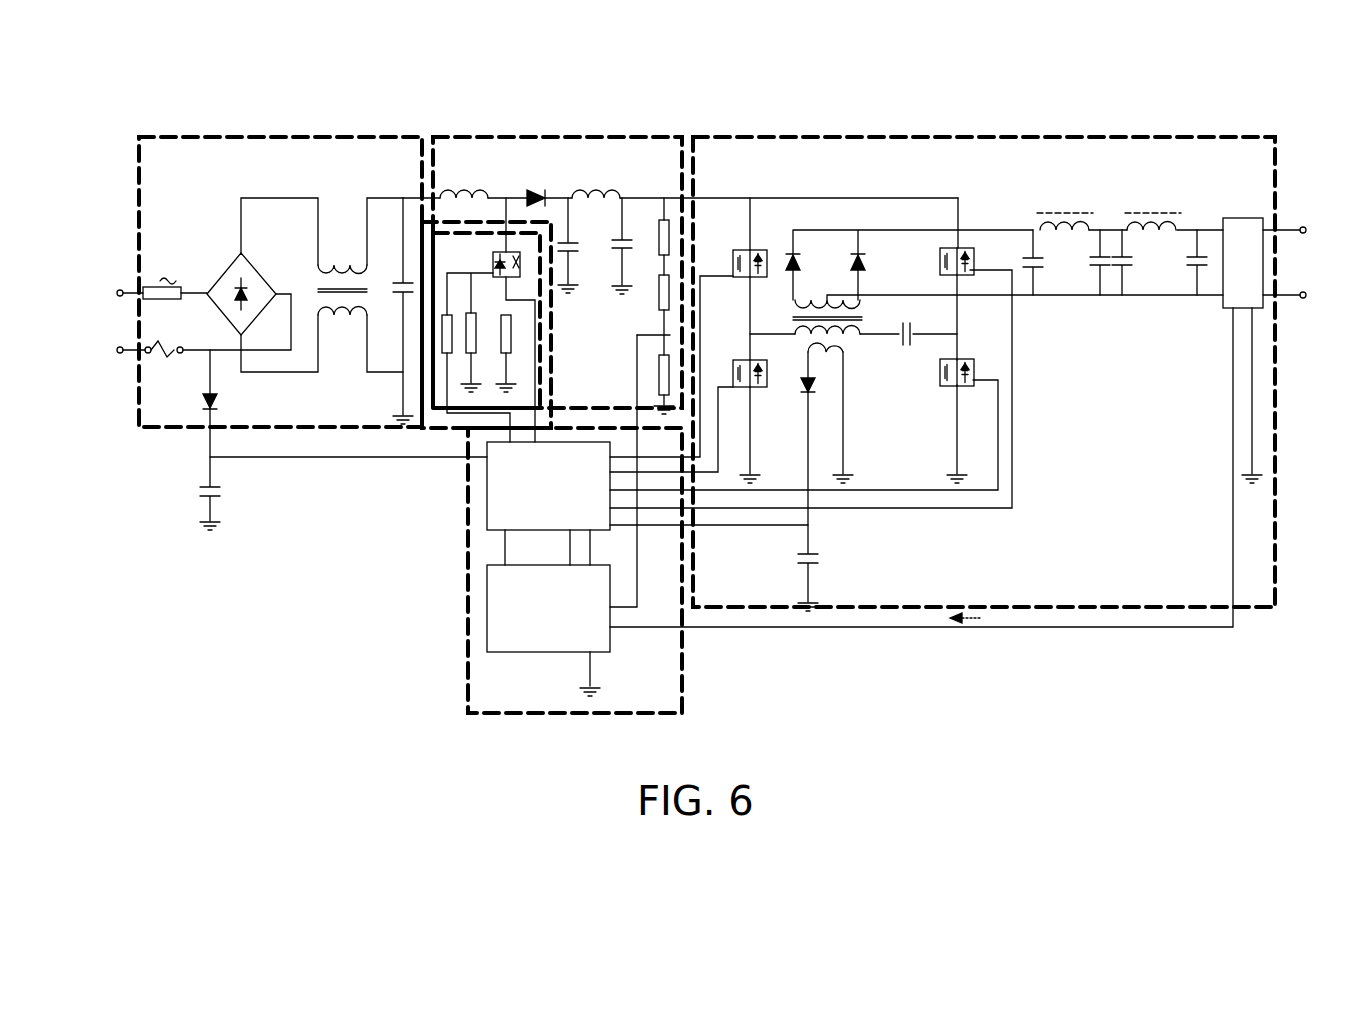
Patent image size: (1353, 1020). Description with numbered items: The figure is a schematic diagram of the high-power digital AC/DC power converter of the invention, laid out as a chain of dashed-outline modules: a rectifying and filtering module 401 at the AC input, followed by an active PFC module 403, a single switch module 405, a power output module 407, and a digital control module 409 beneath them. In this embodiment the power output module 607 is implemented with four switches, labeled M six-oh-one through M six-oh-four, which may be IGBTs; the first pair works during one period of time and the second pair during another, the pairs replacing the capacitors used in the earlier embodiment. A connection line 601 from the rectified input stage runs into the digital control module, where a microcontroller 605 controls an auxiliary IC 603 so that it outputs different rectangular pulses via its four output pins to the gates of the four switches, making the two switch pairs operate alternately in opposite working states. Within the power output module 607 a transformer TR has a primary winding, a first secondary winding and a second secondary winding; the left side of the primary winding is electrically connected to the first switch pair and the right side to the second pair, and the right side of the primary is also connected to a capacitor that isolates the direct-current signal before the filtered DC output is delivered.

The rectifying and filtering module 401 is at (262, 152).
The active PFC module 403 is at (560, 152).
The single switch module 405 is at (462, 398).
The power output module 407 is at (848, 152).
The digital control module 409 is at (500, 712).
The connection line 601 is at (366, 456).
The auxiliary IC 603 is at (548, 489).
The microcontroller 605 is at (550, 630).
The power output module 607 is at (827, 628).